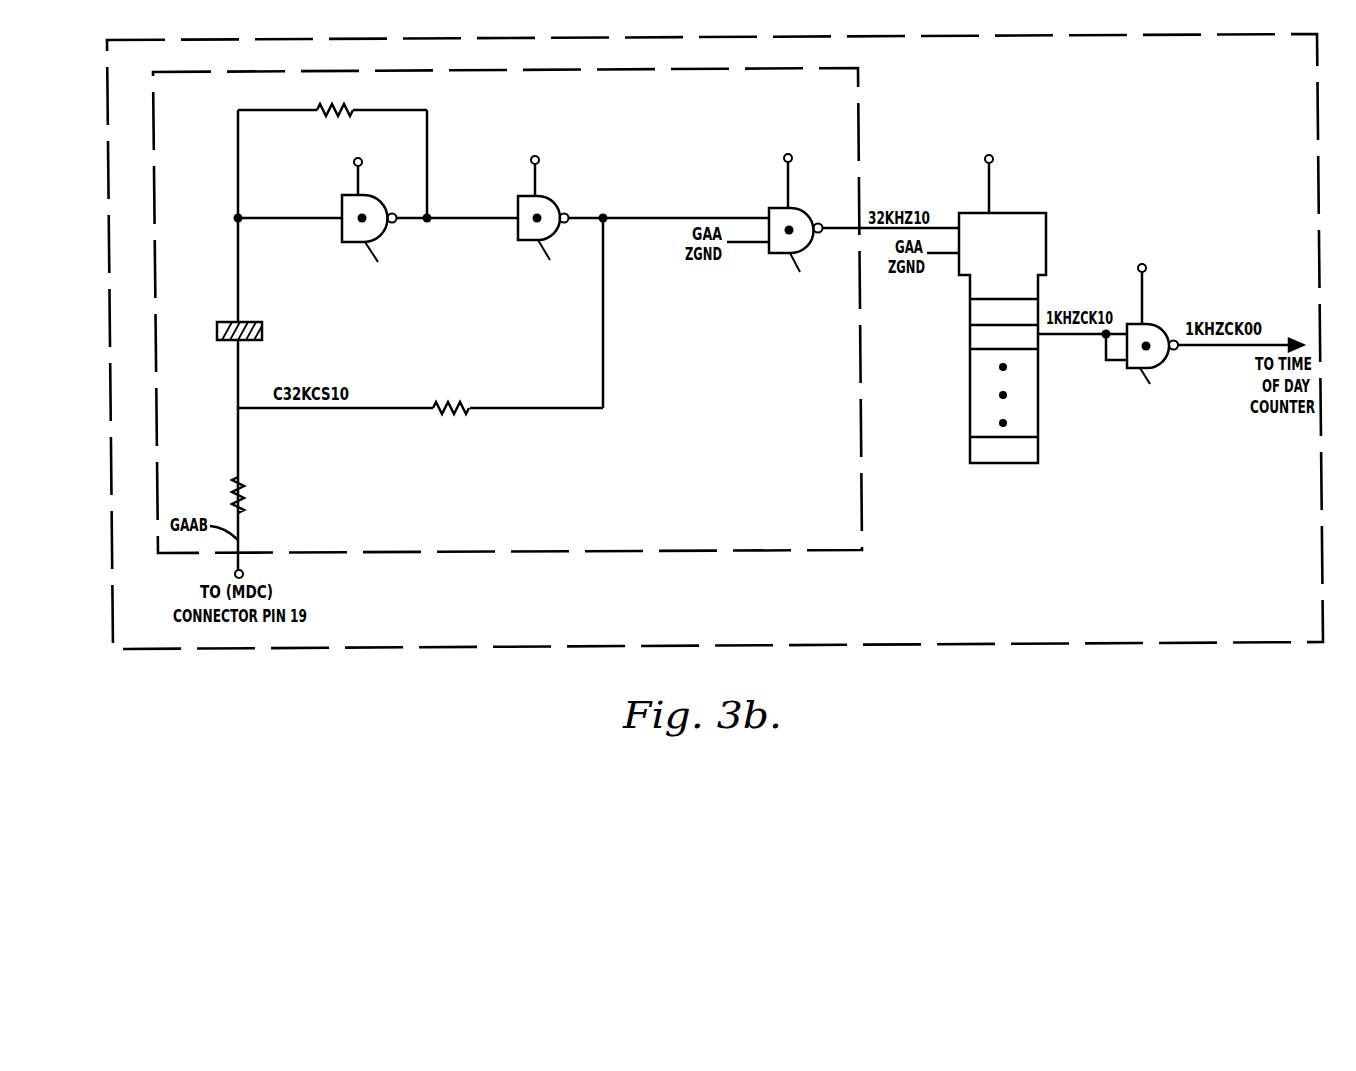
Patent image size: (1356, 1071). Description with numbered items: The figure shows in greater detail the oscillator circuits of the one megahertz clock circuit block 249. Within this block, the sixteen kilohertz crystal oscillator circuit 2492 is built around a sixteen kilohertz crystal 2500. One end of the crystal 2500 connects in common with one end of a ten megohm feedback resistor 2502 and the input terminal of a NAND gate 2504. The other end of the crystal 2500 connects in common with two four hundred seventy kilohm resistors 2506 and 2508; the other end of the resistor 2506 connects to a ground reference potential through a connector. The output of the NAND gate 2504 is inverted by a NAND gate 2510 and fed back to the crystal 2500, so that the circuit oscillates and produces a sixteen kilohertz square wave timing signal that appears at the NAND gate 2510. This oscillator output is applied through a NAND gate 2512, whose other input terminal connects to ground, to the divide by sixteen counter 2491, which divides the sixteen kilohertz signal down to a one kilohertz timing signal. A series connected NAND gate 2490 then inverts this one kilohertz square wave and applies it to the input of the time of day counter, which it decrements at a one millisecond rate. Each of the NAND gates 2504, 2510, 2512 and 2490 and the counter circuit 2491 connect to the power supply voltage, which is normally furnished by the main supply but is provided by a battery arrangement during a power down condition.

The one megahertz clock circuit 249 is at (1176, 593).
The 16 kilohertz crystal oscillator circuit 2492 is at (788, 537).
The 16 kilohertz crystal 2500 is at (220, 320).
The 10 megohm feedback resistor 2502 is at (318, 112).
The NAND gate 2504 is at (345, 196).
The 470 kilohm resistor 2506 is at (237, 482).
The 470 kilohm resistor 2508 is at (458, 412).
The NAND gate 2510 is at (520, 197).
The NAND gate 2512 is at (770, 208).
The divide by 16 counter 2491 is at (1030, 213).
The NAND gate 2490 is at (1168, 358).